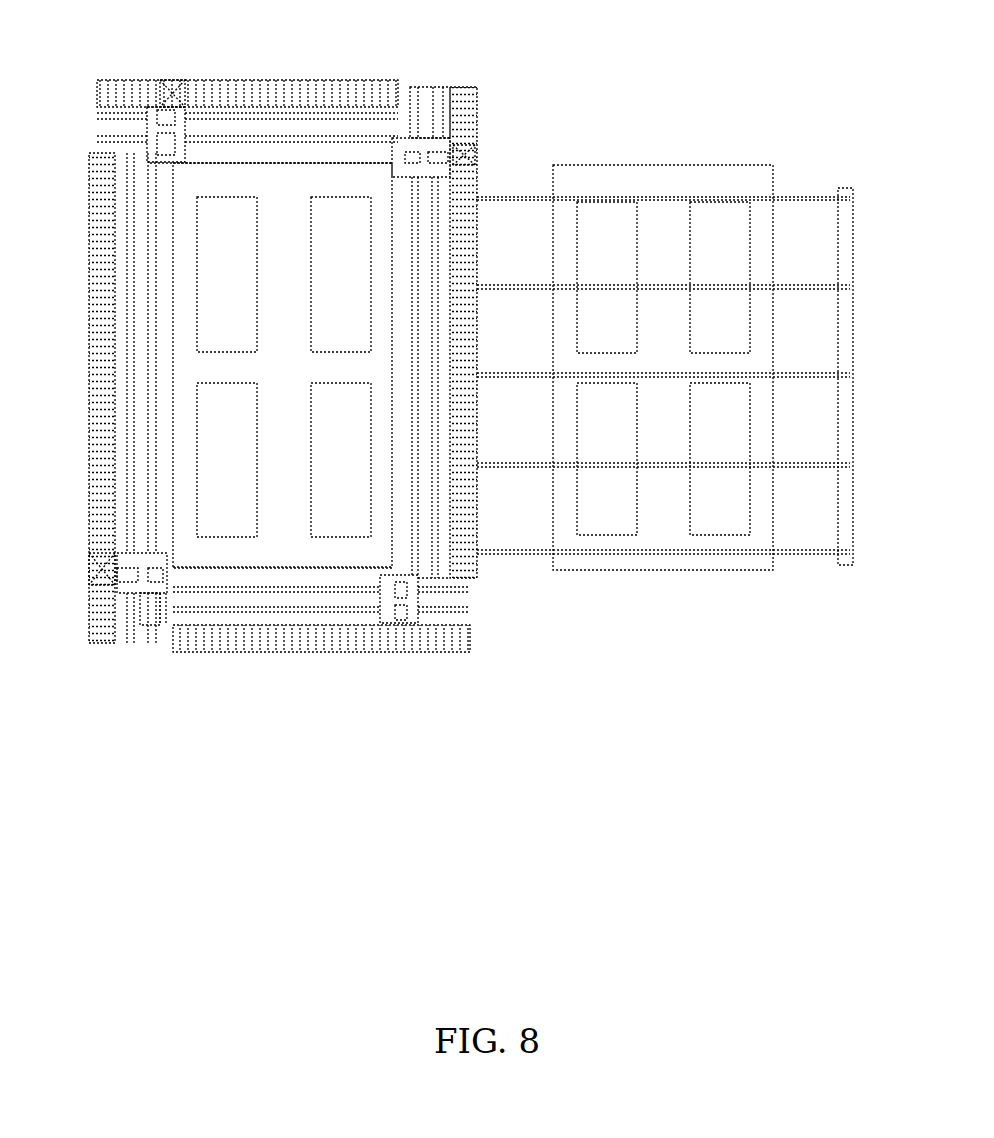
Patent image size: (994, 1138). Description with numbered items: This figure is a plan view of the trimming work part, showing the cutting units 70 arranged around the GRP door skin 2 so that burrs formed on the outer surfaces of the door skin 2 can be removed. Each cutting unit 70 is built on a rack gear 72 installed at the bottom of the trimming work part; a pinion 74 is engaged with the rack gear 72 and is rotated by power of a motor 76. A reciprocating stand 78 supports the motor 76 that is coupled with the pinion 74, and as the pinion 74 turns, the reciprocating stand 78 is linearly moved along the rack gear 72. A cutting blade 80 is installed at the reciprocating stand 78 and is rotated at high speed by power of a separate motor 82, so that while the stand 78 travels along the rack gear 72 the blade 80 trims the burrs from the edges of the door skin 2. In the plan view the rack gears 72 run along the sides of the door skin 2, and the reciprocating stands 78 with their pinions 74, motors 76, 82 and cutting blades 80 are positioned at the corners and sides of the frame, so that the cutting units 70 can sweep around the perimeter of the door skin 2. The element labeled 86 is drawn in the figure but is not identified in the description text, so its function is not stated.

The GRP door skin 2 is at (270, 568).
The cutting unit 70 is at (307, 63).
The rack gear 72 is at (86, 600).
The pinion 74 is at (96, 573).
The motor 76 is at (112, 563).
The reciprocating stand 78 is at (192, 100).
The cutting blade 80 is at (160, 100).
The motor 82 is at (162, 645).
The guide bar 86 is at (820, 372).